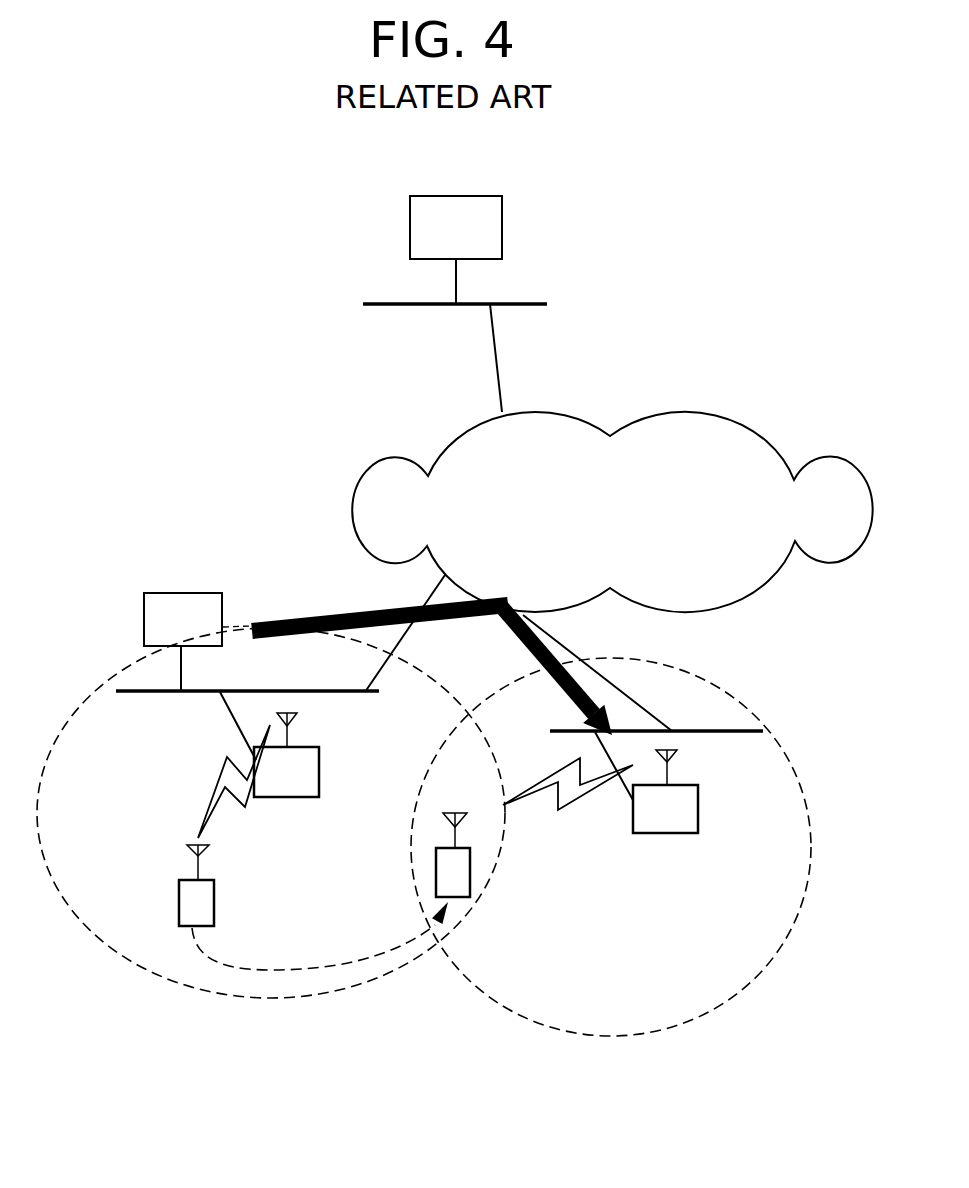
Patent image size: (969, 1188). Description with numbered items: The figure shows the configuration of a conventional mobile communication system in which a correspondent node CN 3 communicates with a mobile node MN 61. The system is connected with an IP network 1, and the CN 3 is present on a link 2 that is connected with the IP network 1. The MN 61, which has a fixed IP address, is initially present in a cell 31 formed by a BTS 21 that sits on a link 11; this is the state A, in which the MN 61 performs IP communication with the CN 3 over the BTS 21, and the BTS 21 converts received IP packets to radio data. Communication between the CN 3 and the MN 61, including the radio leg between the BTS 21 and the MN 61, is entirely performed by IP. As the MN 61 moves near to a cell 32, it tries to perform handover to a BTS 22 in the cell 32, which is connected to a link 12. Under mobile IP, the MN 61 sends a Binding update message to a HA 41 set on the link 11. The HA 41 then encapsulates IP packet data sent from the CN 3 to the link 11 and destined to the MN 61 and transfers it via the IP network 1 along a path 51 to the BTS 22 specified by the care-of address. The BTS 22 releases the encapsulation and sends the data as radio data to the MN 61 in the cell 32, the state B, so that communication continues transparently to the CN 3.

The IP network 1 is at (715, 412).
The link 2 is at (528, 302).
The CN 3 is at (503, 213).
The link 11 is at (150, 696).
The link 12 is at (715, 728).
The BTS 21 is at (283, 797).
The BTS 22 is at (643, 833).
The cell 31 is at (118, 952).
The cell 32 is at (497, 1003).
The HA 41 is at (186, 593).
The path 51 is at (460, 620).
The MN 61 is at (176, 878).